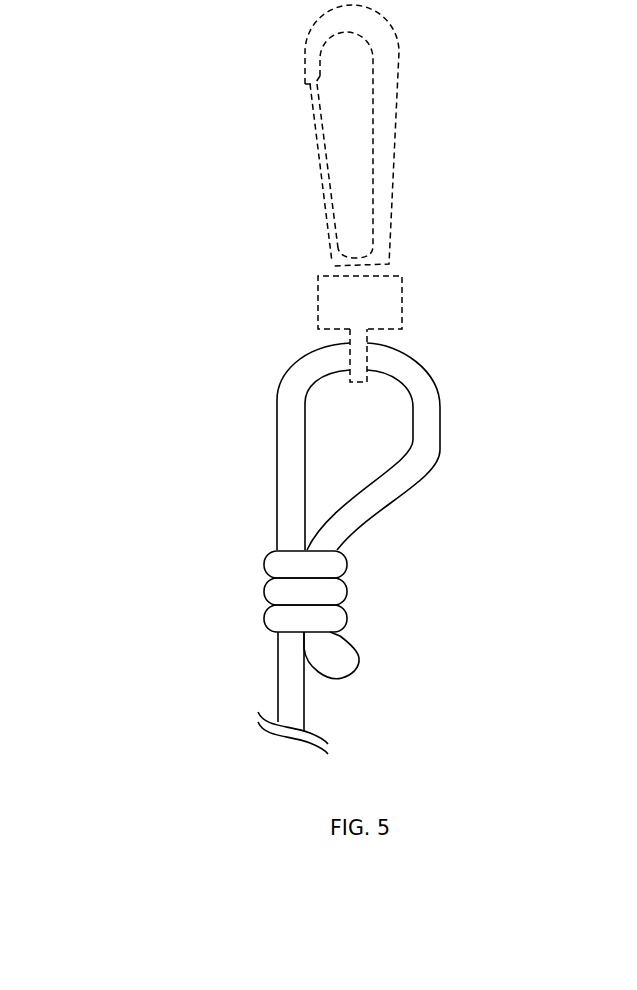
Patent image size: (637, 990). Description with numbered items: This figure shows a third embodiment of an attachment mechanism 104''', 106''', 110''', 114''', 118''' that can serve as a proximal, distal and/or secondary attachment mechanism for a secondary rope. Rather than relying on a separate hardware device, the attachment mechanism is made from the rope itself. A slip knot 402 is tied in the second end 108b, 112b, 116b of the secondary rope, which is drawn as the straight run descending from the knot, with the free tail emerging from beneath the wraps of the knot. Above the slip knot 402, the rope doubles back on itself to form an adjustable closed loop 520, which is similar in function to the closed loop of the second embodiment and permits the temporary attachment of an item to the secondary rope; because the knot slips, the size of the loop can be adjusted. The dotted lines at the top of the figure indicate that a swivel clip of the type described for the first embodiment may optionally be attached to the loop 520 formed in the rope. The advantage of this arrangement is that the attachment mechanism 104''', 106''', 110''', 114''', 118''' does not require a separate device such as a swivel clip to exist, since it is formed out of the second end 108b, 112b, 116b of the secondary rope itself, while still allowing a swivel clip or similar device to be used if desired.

The attachment mechanism 104''' is at (269, 379).
The attachment mechanism 106''' is at (269, 379).
The attachment mechanism 110''' is at (269, 379).
The attachment mechanism 114''' is at (269, 379).
The attachment mechanism 118''' is at (269, 379).
The second end of secondary rope 108b is at (228, 598).
The second end of secondary rope 112b is at (228, 598).
The second end of secondary rope 116b is at (287, 492).
The adjustable closed loop 520 is at (397, 430).
The slip knot 402 is at (380, 592).